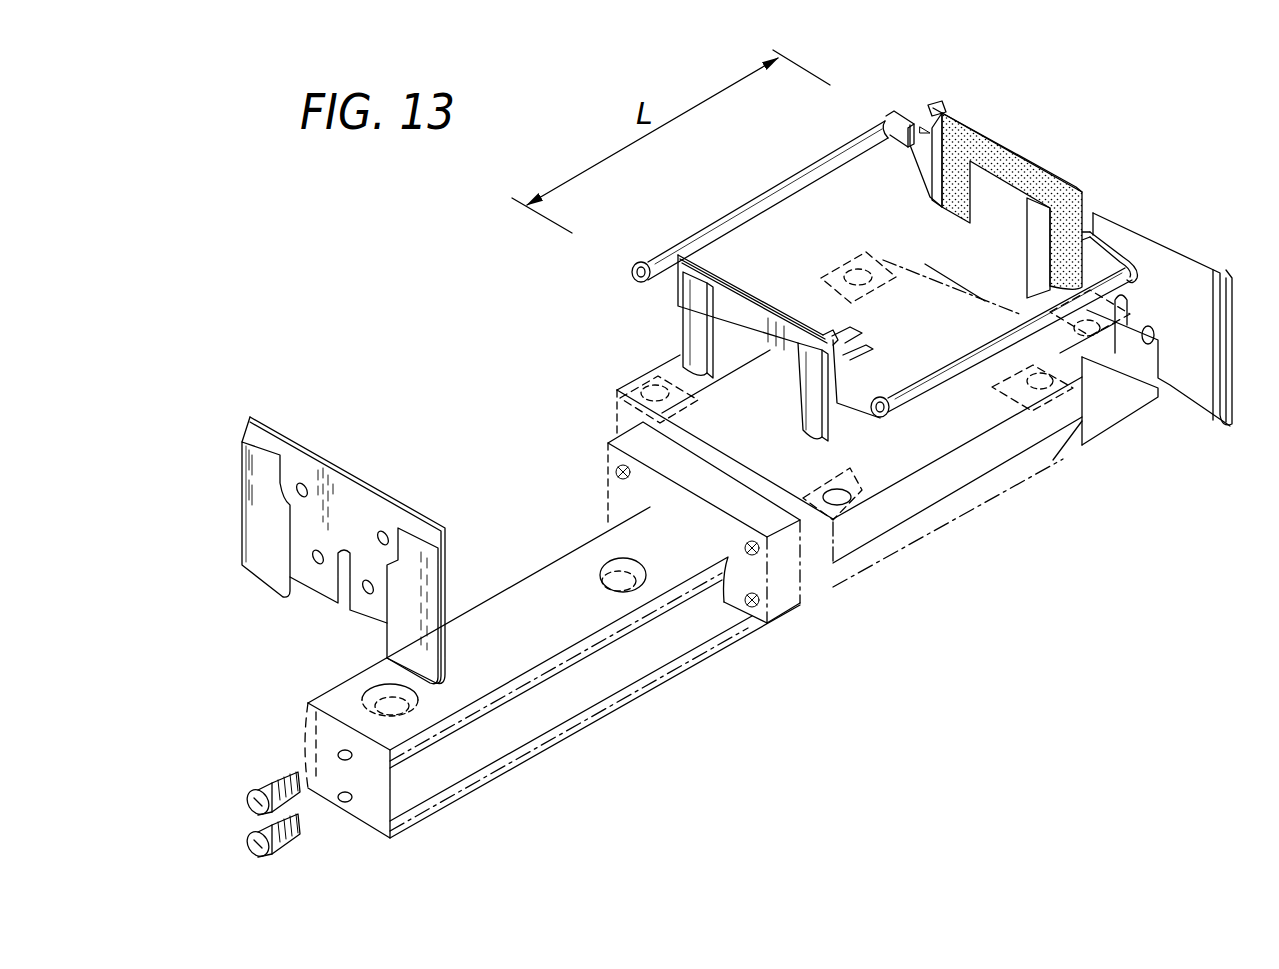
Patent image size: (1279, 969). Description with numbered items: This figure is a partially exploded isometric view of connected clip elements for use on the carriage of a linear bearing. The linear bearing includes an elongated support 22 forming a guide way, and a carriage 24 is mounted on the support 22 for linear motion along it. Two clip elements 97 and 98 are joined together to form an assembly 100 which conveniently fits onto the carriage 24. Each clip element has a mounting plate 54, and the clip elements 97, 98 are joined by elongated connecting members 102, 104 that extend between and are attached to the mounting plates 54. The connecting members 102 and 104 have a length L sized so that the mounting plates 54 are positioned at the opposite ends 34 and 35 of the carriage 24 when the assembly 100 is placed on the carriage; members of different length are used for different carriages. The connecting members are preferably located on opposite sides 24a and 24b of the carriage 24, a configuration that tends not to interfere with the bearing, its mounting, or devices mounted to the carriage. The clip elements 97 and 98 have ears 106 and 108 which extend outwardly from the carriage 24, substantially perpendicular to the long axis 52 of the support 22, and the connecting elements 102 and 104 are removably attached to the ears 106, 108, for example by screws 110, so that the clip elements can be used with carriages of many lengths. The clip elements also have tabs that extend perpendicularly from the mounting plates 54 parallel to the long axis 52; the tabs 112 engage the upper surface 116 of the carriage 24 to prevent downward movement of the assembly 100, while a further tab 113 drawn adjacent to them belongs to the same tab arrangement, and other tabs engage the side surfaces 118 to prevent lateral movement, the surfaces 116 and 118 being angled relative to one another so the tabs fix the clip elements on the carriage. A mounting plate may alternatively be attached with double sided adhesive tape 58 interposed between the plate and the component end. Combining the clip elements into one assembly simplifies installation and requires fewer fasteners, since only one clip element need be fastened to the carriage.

The elongated support 22 is at (1130, 407).
The carriage 24 is at (1022, 466).
The side of carriage 24a is at (958, 483).
The side of carriage 24b is at (830, 278).
The proximal end of carriage 34 is at (762, 590).
The end of carriage 35 is at (984, 300).
The long axis of support 52 is at (305, 793).
The mounting plate 54 is at (763, 300).
The double sided adhesive tape 58 is at (985, 135).
The clip element 97 is at (630, 325).
The clip element 98 is at (1062, 154).
The assembly 100 is at (872, 78).
The elongated connecting member 102 is at (767, 197).
The elongated connecting member 104 is at (913, 393).
The ear 106 is at (912, 118).
The ear 108 is at (1107, 247).
The screw 110 is at (875, 381).
The tab 112 is at (855, 330).
The tab 113 is at (862, 352).
The upper surface of carriage 116 is at (812, 497).
The side surface of carriage 118 is at (857, 533).